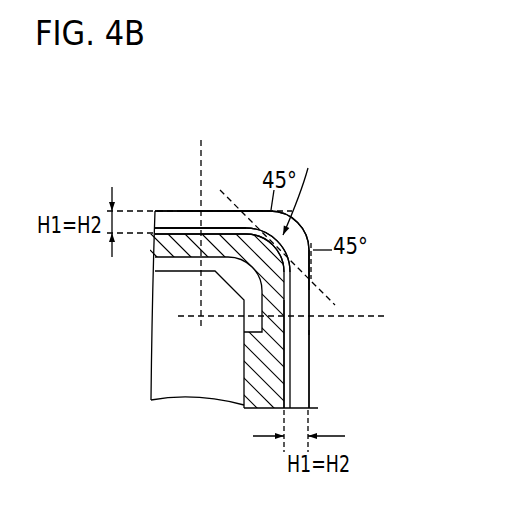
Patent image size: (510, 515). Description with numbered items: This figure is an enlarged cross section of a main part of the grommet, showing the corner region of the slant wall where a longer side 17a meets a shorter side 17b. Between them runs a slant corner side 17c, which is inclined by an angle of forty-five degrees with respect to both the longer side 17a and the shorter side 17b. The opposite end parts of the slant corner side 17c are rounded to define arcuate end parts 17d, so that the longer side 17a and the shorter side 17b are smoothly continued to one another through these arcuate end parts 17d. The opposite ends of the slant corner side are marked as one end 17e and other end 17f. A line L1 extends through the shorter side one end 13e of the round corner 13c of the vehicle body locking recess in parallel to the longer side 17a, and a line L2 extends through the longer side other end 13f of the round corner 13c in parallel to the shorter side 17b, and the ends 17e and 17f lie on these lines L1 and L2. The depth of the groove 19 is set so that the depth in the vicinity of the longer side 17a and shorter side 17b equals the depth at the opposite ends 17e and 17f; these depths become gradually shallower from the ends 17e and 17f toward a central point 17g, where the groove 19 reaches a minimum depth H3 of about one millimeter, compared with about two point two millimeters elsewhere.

The longer side 17a is at (311, 383).
The shorter side 17b is at (185, 211).
The slant corner side 17c is at (301, 240).
The arcuate end part 17d is at (241, 211).
The one end of slant corner side 17e is at (204, 211).
The other end of slant corner side 17f is at (311, 322).
The central point 17g is at (291, 233).
The round corner of vehicle body locking recess 13c is at (309, 246).
The shorter side one end of round corner 13e is at (195, 231).
The longer side other end of round corner 13f is at (306, 350).
The groove 19 is at (198, 211).
The line L1 is at (203, 223).
The line L2 is at (294, 316).
The minimum depth H3 is at (306, 187).